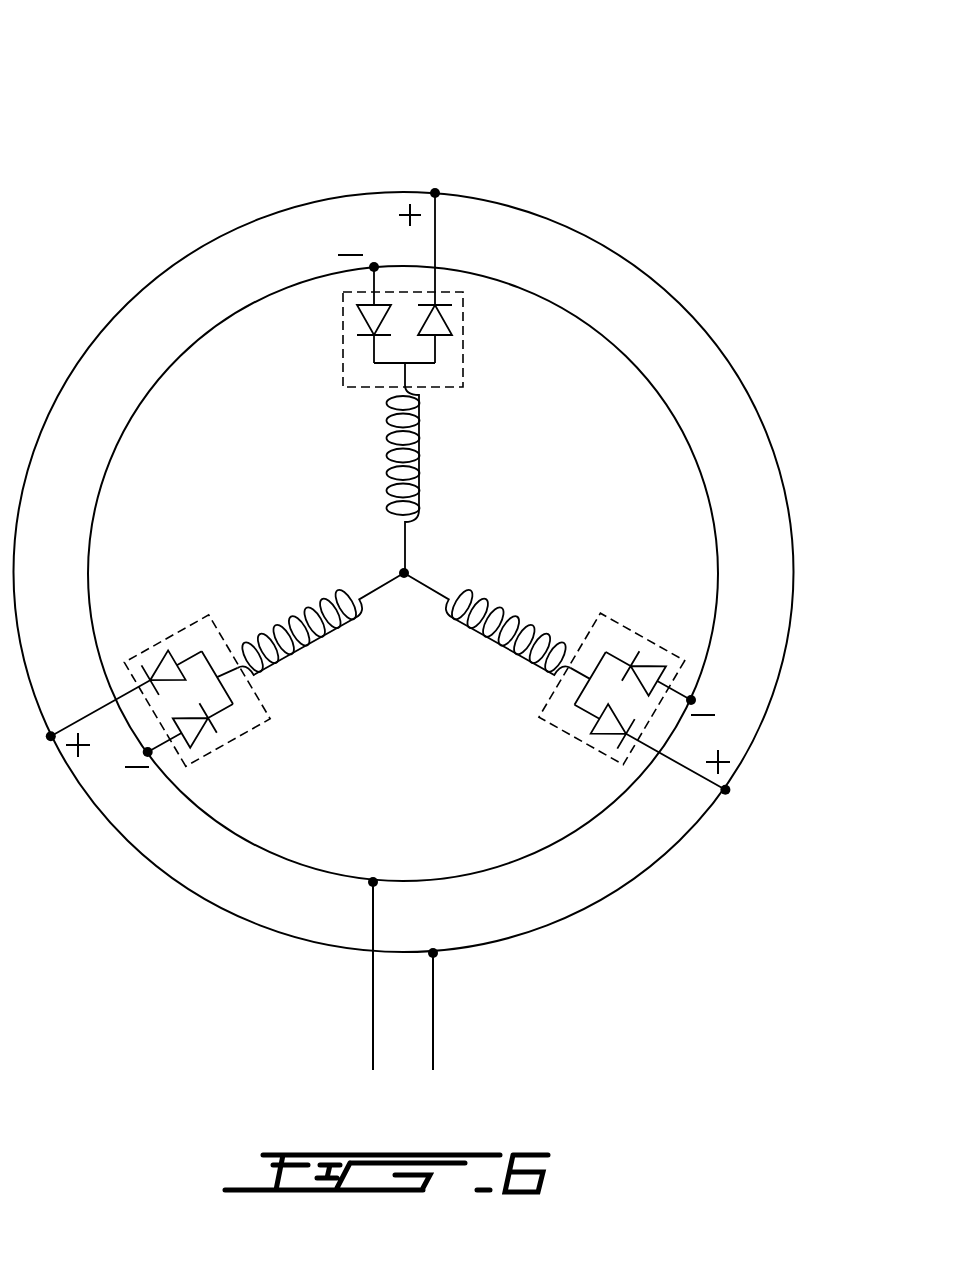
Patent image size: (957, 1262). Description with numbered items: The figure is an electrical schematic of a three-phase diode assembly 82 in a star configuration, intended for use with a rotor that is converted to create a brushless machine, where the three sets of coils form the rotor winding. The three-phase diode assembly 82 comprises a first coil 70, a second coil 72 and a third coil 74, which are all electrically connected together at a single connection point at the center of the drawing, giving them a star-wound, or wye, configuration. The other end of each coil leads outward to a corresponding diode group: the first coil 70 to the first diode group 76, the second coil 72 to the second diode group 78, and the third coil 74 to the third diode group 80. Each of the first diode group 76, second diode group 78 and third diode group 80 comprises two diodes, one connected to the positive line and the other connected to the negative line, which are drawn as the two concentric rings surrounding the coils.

The first coil 70 is at (420, 447).
The second coil 72 is at (497, 608).
The third coil 74 is at (310, 608).
The first diode group 76 is at (463, 338).
The second diode group 78 is at (628, 627).
The third diode group 80 is at (177, 627).
The 3-phase diode assembly 82 is at (750, 188).